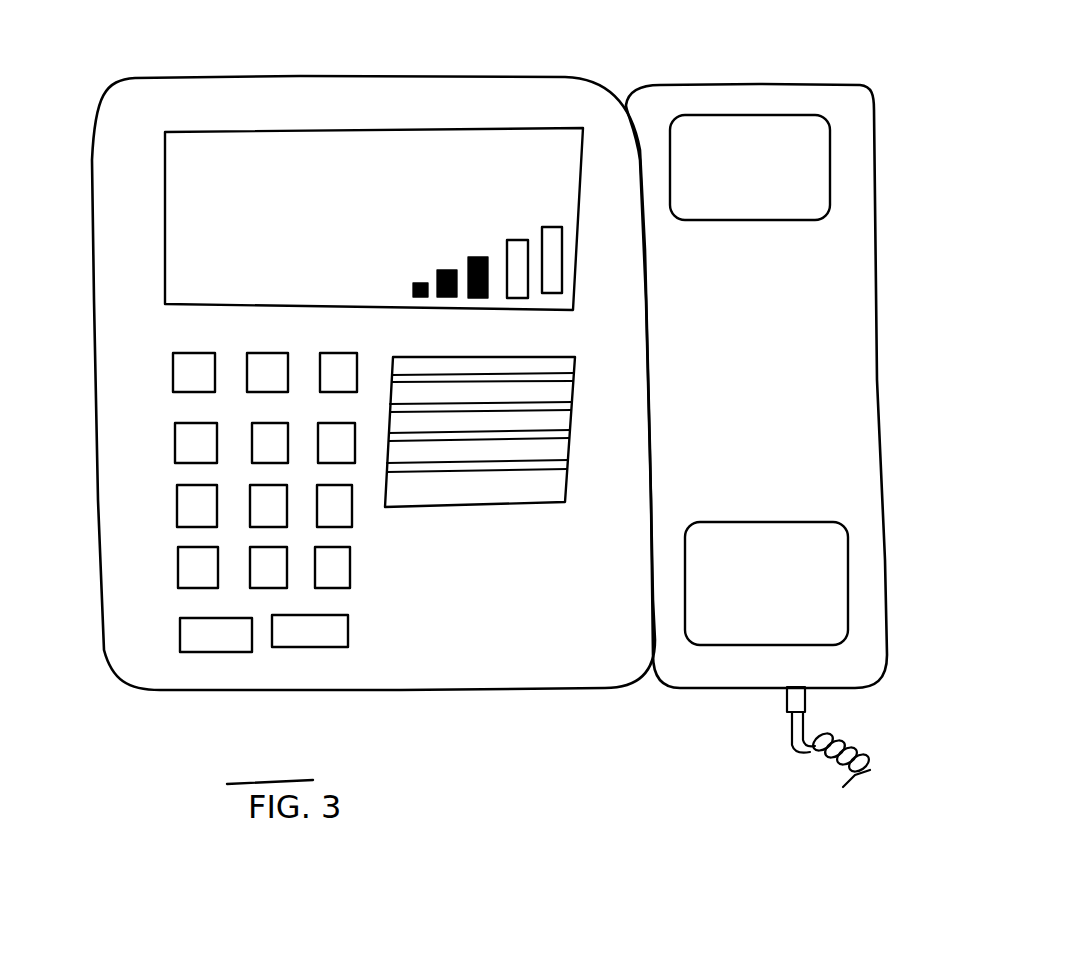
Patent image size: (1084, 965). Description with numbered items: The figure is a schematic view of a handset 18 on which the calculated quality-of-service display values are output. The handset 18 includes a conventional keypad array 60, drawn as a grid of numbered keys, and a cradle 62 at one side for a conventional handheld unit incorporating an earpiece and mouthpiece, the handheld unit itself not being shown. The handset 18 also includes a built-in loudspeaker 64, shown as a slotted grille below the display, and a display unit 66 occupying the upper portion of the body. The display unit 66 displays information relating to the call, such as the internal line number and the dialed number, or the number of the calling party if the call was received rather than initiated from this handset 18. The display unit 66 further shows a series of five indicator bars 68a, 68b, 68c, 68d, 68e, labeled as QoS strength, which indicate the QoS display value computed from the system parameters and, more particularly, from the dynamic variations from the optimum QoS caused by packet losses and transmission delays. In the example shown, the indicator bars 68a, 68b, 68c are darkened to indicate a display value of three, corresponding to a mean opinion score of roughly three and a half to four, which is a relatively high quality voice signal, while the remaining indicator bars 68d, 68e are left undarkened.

The handset 18 is at (135, 742).
The keypad array 60 is at (136, 474).
The cradle 62 is at (847, 332).
The built-in loudspeaker 64 is at (468, 493).
The display unit 66 is at (530, 133).
The indicator bar 68a is at (420, 297).
The indicator bar 68b is at (448, 297).
The indicator bar 68c is at (477, 298).
The indicator bar 68d is at (518, 297).
The indicator bar 68e is at (560, 280).